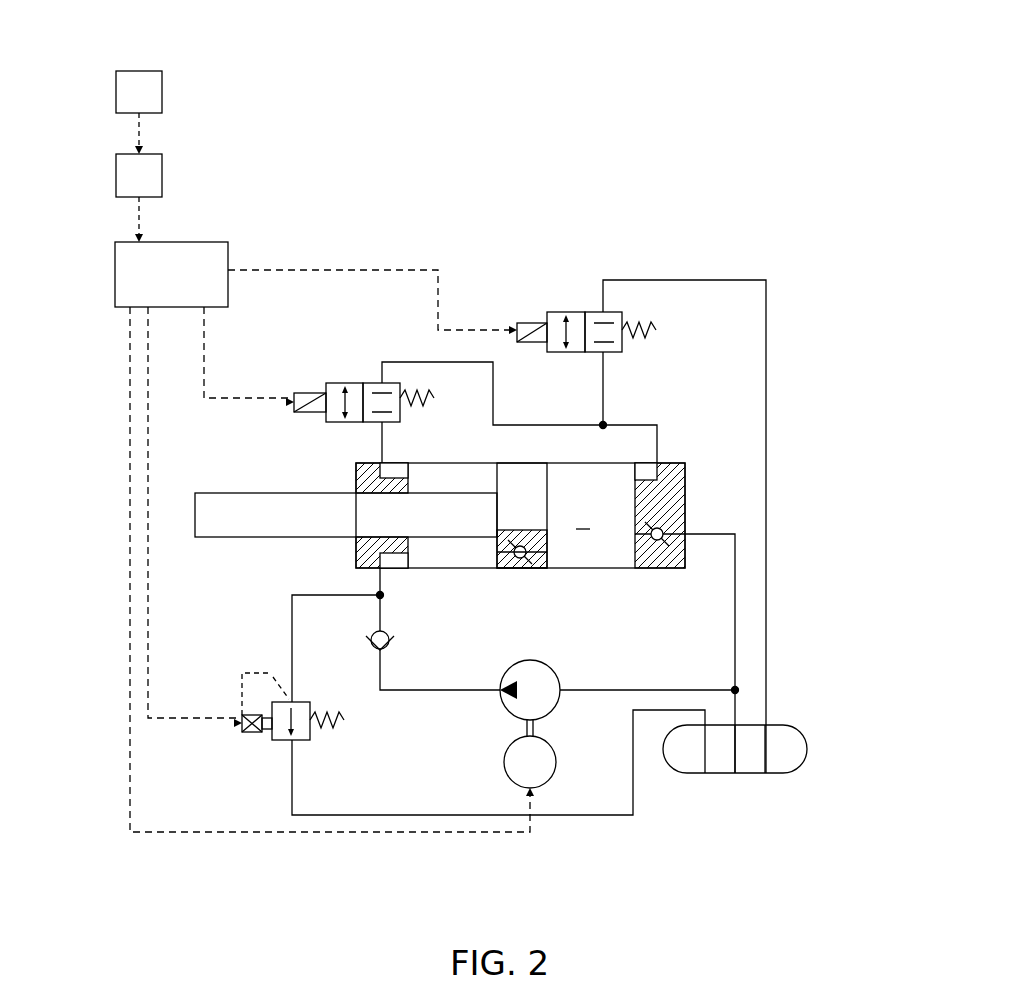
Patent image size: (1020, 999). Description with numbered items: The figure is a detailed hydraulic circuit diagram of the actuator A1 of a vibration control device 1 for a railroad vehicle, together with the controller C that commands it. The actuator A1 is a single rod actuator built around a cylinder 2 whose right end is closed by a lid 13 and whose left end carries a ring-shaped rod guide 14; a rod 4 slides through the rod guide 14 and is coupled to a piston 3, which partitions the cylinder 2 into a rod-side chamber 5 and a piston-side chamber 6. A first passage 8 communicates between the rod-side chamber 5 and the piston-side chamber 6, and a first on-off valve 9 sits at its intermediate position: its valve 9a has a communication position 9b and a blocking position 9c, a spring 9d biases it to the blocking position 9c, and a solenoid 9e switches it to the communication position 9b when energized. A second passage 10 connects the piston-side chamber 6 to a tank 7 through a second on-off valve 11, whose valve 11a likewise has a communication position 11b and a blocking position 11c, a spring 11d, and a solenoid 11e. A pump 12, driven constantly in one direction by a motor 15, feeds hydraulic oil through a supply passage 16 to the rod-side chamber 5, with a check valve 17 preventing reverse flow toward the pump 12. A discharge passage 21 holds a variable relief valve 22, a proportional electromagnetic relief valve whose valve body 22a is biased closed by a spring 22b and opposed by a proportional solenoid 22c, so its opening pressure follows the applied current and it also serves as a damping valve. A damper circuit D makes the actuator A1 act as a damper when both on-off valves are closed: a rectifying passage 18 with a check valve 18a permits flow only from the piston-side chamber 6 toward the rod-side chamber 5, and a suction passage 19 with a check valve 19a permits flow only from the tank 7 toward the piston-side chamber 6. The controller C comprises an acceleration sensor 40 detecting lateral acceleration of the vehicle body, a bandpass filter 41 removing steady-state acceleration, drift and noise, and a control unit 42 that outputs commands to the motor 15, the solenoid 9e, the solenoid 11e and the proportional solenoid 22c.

The power generation / hydraulic system 1 is at (92, 78).
The acceleration sensor 40 is at (162, 90).
The bandpass filter 41 is at (162, 165).
The control unit 42 is at (228, 258).
The controller C is at (230, 213).
The actuator A1 is at (785, 258).
The first passage 8 is at (435, 361).
The first on-off valve 9 is at (365, 402).
The valve 9a is at (323, 388).
The communication position 9b is at (345, 383).
The blocking position 9c is at (390, 424).
The spring 9d is at (434, 398).
The solenoid 9e is at (290, 406).
The second on-off valve 11 is at (603, 332).
The valve 11a is at (555, 353).
The communication position 11b is at (574, 312).
The blocking position 11c is at (612, 354).
The spring 11d is at (656, 330).
The solenoid 11e is at (522, 322).
The second passage 10 is at (768, 478).
The cylinder 2 is at (583, 568).
The piston 3 is at (507, 570).
The rod 4 is at (234, 537).
The rod-side chamber 5 is at (452, 478).
The piston-side chamber 6 is at (591, 515).
The lid 13 is at (685, 478).
The rod guide 14 is at (356, 553).
The rectifying passage 18 is at (542, 572).
The check valve 18a is at (523, 570).
The suction passage 19 is at (735, 610).
The check valve 19a is at (660, 568).
The damper circuit D is at (742, 550).
The supply passage 16 is at (372, 610).
The check valve 17 is at (392, 648).
The pump 12 is at (558, 668).
The motor 15 is at (504, 760).
The discharge passage 21 is at (350, 815).
The tank 7 is at (780, 722).
The variable relief valve 22 is at (293, 731).
The valve body 22a is at (270, 745).
The spring 22b is at (344, 720).
The proportional solenoid 22c is at (240, 728).